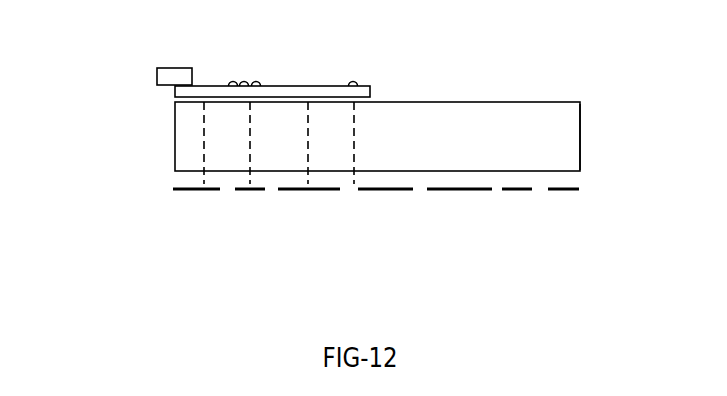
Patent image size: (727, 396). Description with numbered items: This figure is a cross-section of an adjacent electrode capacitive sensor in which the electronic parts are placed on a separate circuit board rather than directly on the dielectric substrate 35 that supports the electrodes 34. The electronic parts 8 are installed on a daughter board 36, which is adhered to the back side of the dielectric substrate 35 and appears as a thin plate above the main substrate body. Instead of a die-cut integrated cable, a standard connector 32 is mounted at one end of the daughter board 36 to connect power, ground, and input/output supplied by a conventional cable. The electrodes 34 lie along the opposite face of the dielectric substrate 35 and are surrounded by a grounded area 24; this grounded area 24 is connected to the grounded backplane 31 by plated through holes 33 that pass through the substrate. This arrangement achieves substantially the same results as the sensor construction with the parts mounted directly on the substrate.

The electronic parts 8 is at (263, 81).
The grounded area 24 is at (303, 190).
The grounded backplane 31 is at (473, 102).
The standard connector 32 is at (167, 75).
The plated through holes 33 is at (354, 162).
The electrodes 34 is at (248, 189).
The dielectric substrate 35 is at (552, 140).
The daughter board 36 is at (172, 93).